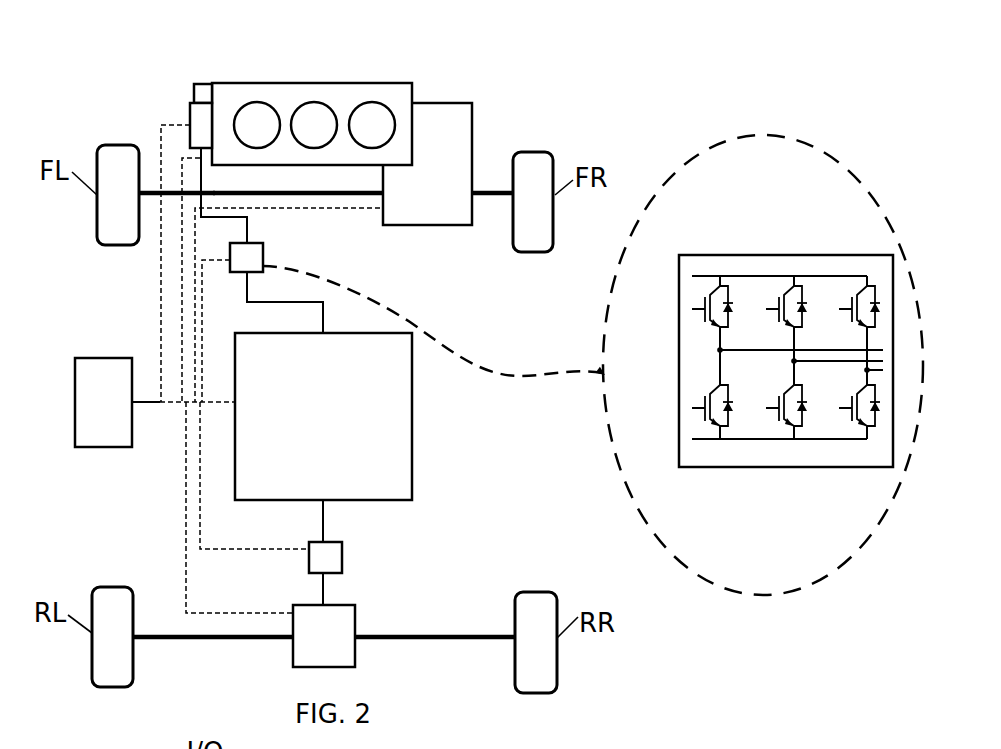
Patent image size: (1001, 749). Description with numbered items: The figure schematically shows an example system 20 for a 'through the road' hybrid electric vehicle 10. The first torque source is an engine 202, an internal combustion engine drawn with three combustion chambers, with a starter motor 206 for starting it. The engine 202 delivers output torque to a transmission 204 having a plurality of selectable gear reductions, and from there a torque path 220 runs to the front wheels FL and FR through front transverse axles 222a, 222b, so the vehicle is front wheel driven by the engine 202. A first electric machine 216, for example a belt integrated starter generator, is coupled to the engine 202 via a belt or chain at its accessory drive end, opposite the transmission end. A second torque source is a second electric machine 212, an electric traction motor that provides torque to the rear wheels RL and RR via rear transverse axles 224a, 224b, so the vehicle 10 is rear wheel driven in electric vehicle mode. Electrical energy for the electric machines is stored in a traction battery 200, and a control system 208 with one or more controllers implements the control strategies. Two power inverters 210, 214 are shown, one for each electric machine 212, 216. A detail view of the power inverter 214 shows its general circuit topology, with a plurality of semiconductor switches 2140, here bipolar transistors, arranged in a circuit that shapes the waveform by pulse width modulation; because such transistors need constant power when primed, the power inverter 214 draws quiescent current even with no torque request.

The hybrid electric vehicle 10 is at (573, 32).
The system 20 is at (528, 100).
The traction battery 200 is at (412, 418).
The engine 202 is at (285, 83).
The transmission 204 is at (448, 103).
The starter motor 206 is at (205, 84).
The control system 208 is at (75, 400).
The power inverter 210 is at (342, 557).
The second electric machine 212 is at (355, 655).
The power inverter 214 is at (263, 258).
The first electric machine 216 is at (192, 103).
The torque path 220 is at (362, 195).
The first axle 222a is at (153, 197).
The first axle 222b is at (493, 197).
The second axle 224a is at (170, 633).
The second axle 224b is at (452, 633).
The semiconductor switches 2140 is at (713, 290).